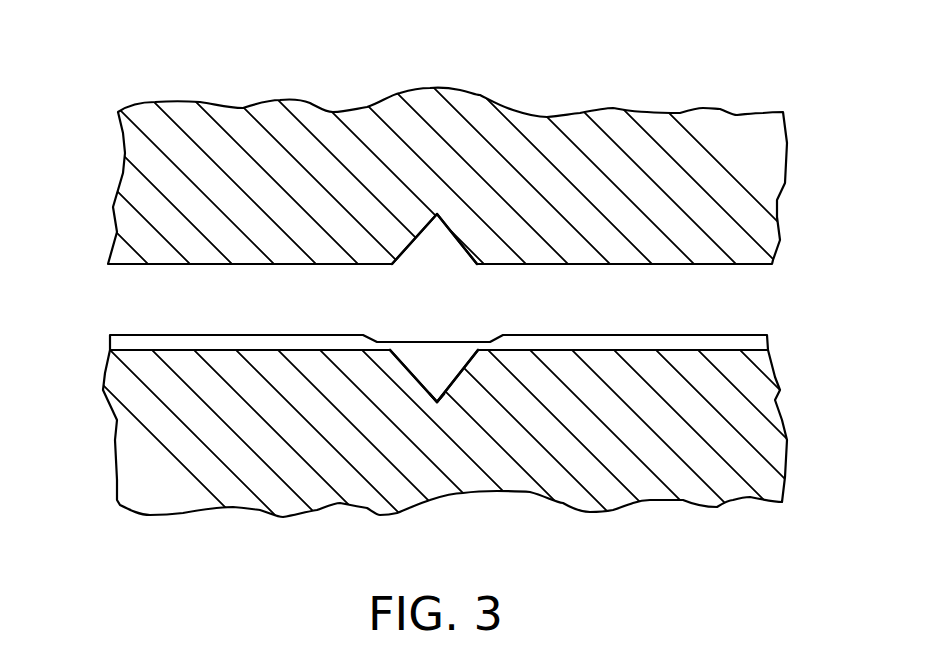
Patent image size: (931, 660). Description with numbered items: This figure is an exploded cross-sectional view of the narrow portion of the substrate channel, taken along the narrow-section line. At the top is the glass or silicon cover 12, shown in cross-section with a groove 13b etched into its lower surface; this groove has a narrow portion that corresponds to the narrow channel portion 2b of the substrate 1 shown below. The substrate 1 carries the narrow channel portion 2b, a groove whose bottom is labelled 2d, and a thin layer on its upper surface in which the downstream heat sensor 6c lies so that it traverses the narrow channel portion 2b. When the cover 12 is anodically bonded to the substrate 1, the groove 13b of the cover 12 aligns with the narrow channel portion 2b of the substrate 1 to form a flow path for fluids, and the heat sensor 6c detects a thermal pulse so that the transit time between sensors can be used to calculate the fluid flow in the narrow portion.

The substrate 1 is at (492, 427).
The narrow channel portion 2b is at (430, 368).
The groove bottom 2d is at (437, 403).
The heat sensor 6c is at (443, 341).
The cover 12 is at (417, 164).
The groove 13b is at (440, 242).